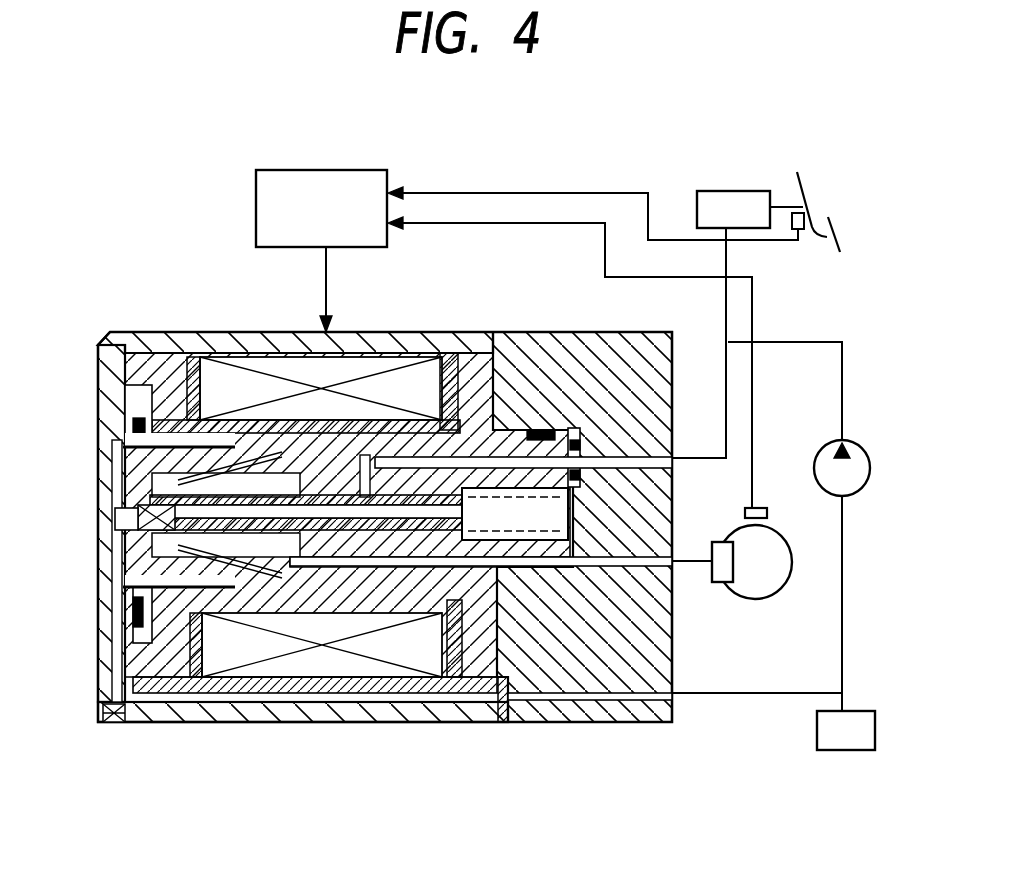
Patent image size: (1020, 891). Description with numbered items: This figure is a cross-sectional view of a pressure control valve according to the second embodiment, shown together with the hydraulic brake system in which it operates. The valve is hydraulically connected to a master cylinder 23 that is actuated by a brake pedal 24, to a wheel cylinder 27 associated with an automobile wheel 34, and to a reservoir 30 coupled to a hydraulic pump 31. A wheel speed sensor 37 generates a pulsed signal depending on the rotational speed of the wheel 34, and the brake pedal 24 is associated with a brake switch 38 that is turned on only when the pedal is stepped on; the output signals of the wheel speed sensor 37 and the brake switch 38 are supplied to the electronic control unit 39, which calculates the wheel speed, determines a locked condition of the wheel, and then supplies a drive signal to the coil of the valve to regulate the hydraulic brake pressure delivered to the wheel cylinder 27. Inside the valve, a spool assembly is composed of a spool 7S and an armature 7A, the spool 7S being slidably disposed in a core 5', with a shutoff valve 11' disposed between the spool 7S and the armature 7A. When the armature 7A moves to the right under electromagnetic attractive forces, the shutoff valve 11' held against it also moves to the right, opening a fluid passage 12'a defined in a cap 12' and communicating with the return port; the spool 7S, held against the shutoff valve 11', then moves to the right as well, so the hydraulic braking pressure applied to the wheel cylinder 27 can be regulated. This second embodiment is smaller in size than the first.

The core 5' is at (385, 500).
The armature 7A is at (173, 440).
The spool 7S is at (413, 497).
The shutoff valve 11' is at (166, 468).
The cap 12' is at (167, 561).
The fluid passage 12'a is at (105, 502).
The master cylinder 23 is at (712, 191).
The brake pedal 24 is at (802, 180).
The wheel cylinder 27 is at (720, 584).
The reservoir 30 is at (817, 738).
The hydraulic pump 31 is at (835, 443).
The automobile wheel 34 is at (782, 590).
The wheel speed sensor 37 is at (757, 506).
The pedal switch 38 is at (800, 231).
The electronic control unit (ECU) 39 is at (375, 170).